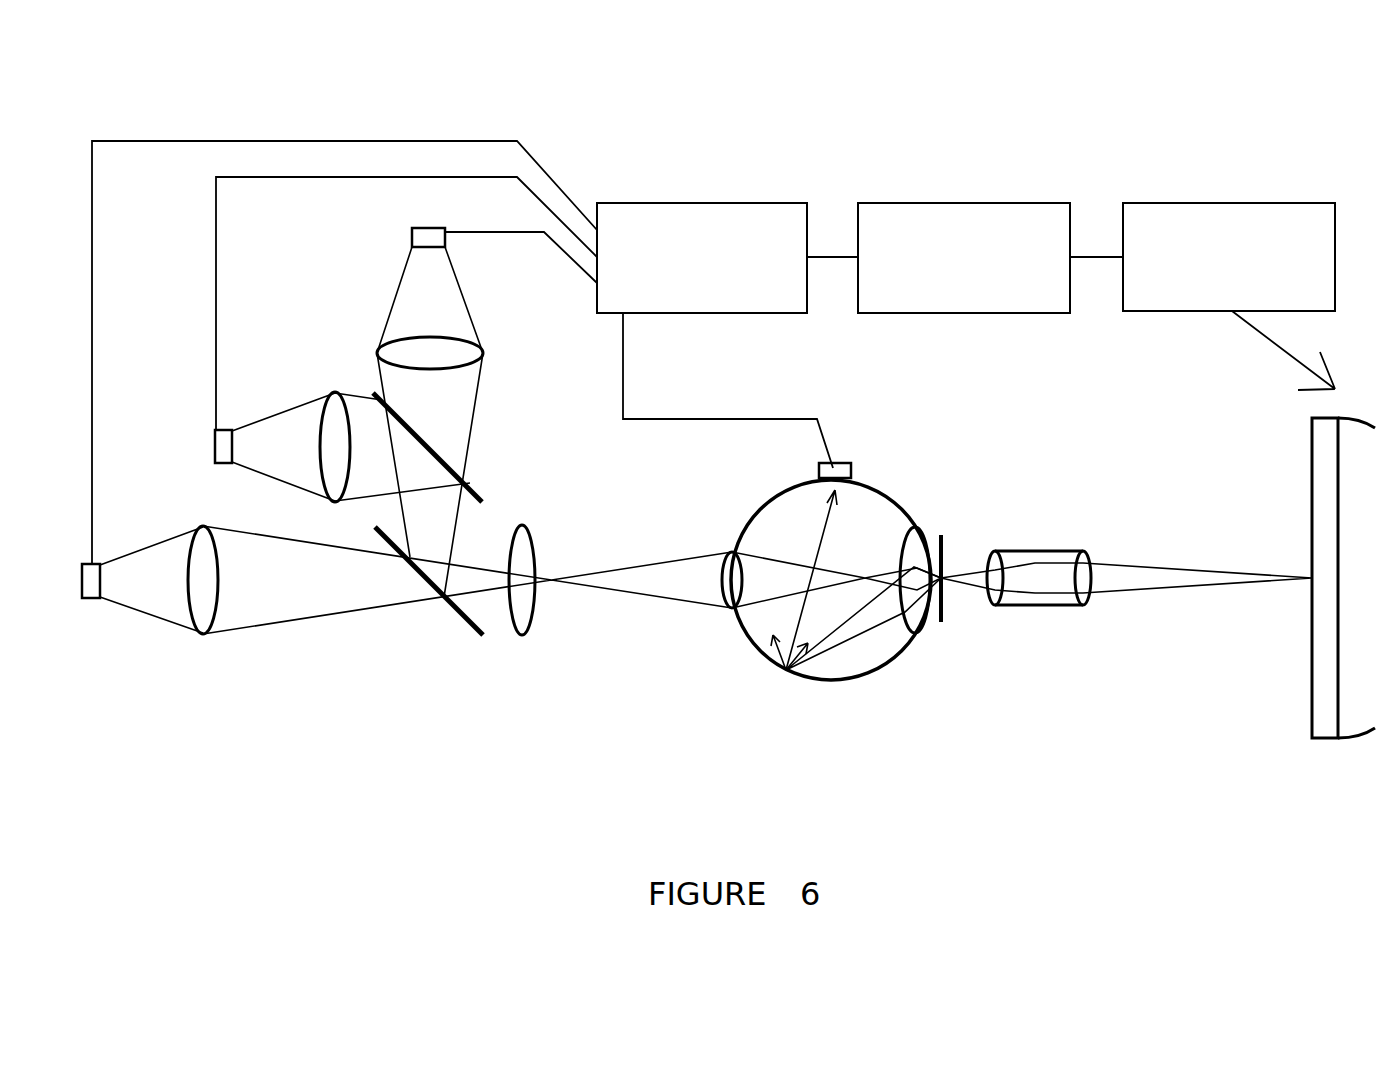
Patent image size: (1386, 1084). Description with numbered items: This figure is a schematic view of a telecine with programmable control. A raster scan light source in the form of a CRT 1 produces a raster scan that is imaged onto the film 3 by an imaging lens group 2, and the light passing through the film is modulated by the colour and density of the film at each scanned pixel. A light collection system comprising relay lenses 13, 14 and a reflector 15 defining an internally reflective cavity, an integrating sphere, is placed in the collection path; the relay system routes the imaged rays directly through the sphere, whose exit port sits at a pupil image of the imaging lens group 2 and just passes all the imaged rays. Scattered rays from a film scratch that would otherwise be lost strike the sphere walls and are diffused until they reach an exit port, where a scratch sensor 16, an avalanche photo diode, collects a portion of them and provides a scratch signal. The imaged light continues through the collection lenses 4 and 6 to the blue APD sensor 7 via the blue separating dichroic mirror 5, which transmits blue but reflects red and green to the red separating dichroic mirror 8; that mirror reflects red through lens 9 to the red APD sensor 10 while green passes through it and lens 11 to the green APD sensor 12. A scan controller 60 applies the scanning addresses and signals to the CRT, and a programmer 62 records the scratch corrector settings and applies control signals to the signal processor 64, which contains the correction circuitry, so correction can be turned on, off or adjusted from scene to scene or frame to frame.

The cathode ray tube 1 is at (1302, 712).
The imaging lens group 2 is at (1057, 617).
The film 3 is at (950, 630).
The collection lens 4 is at (530, 645).
The blue separating dichroic mirror 5 is at (468, 633).
The collection lens 6 is at (198, 647).
The blue avalanche photo diode sensor 7 is at (97, 553).
The red separating dichroic mirror 8 is at (480, 493).
The collection lens 9 is at (330, 383).
The red avalanche photo diode sensor 10 is at (212, 422).
The collection lens 11 is at (490, 342).
The green avalanche photo diode sensor 12 is at (405, 237).
The relay lens 13 is at (903, 635).
The relay lens 14 is at (725, 617).
The integrating sphere 15 is at (825, 692).
The scratch sensor 16 is at (833, 447).
The scan controller 60 is at (1229, 231).
The programmer 62 is at (964, 229).
The signal processor 64 is at (702, 229).